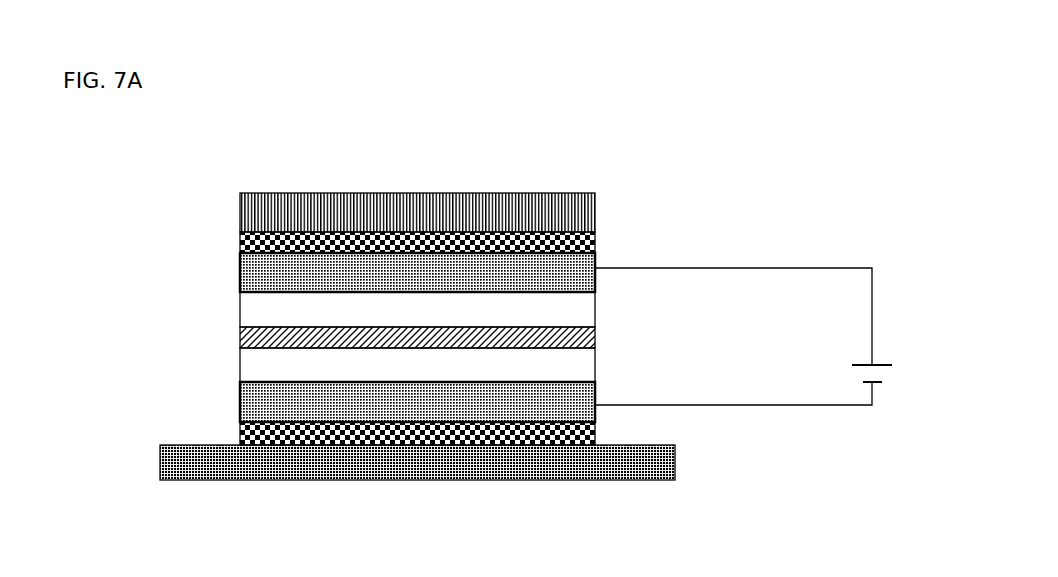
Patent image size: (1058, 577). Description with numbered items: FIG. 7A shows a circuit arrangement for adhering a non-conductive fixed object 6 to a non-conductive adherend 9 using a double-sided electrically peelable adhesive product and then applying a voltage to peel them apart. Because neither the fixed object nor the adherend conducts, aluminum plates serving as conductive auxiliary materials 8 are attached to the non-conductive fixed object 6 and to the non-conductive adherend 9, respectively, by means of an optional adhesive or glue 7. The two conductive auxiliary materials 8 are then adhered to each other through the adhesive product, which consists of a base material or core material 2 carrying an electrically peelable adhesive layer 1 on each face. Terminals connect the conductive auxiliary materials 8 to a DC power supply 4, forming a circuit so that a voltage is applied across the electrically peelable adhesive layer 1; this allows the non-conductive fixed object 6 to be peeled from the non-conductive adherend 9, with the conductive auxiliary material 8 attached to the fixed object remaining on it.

The electrically peelable adhesive layer 1 is at (240, 307).
The base material or core material 2 is at (240, 333).
The DC power supply 4 is at (882, 294).
The non-conductive fixed object 6 is at (280, 193).
The optional adhesive or glue 7 is at (240, 237).
The conductive auxiliary material 8 is at (240, 263).
The non-conductive adherend 9 is at (160, 463).